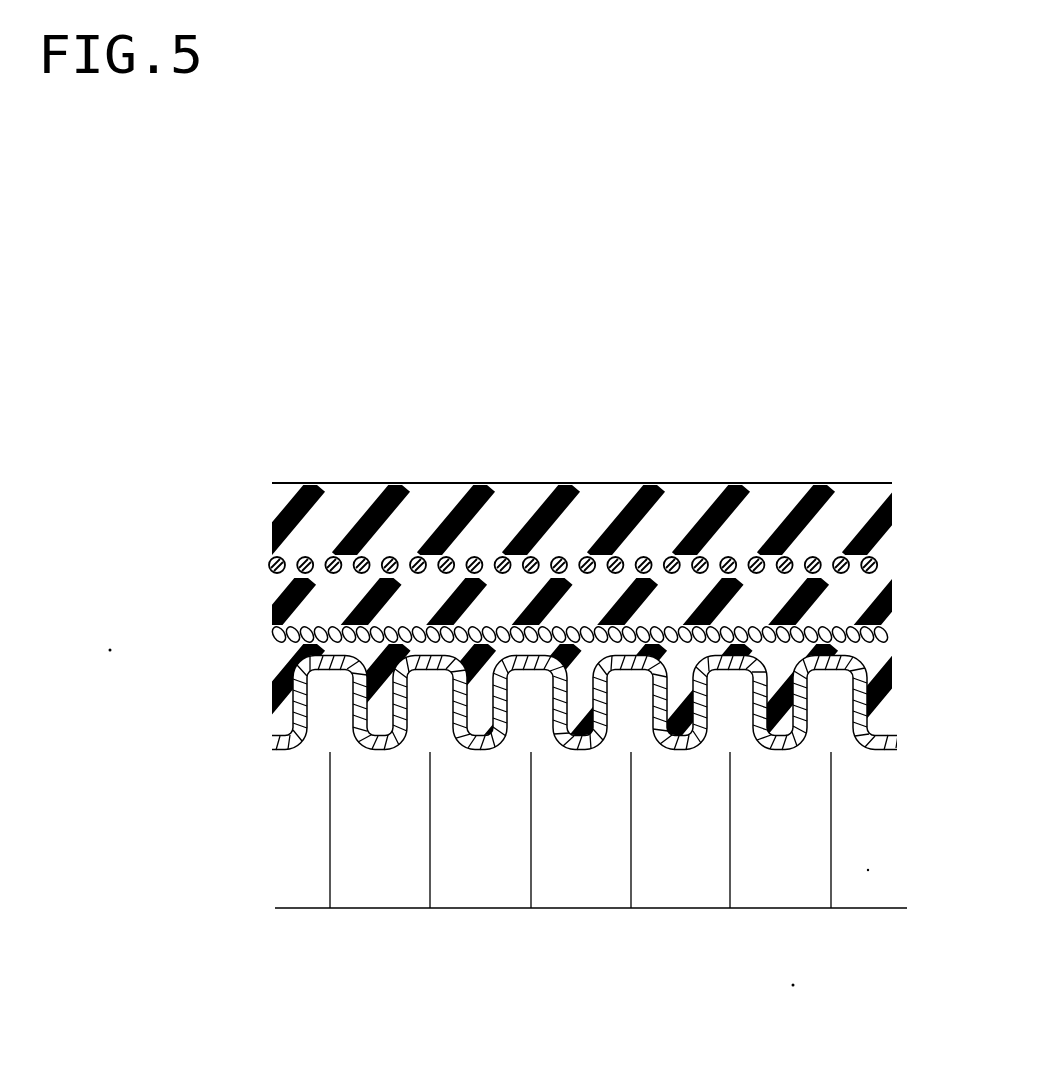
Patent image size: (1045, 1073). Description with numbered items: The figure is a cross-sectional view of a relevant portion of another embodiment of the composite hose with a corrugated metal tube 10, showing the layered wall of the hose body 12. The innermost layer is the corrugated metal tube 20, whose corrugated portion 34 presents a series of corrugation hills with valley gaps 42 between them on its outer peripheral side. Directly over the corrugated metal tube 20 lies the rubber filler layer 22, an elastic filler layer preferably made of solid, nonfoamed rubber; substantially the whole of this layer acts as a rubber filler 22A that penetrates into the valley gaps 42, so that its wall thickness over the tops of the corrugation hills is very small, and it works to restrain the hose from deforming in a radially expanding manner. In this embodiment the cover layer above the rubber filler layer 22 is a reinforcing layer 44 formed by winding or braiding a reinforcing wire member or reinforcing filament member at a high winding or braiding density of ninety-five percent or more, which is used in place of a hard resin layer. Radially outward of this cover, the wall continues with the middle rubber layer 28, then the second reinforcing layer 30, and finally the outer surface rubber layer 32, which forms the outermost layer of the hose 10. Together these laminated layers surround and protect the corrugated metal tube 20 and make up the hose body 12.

The composite hose with a corrugated metal tube 10 is at (565, 612).
The hose body 12 is at (861, 472).
The corrugated metal tube 20 is at (578, 867).
The rubber filler layer 22 is at (785, 665).
The rubber filler 22A is at (378, 703).
The middle rubber layer 28 is at (690, 585).
The second reinforcing layer 30 is at (561, 552).
The outer surface rubber layer 32 is at (848, 500).
The corrugated portion 34 is at (683, 762).
The valley gaps 42 is at (490, 707).
The reinforcing layer 44 is at (496, 614).